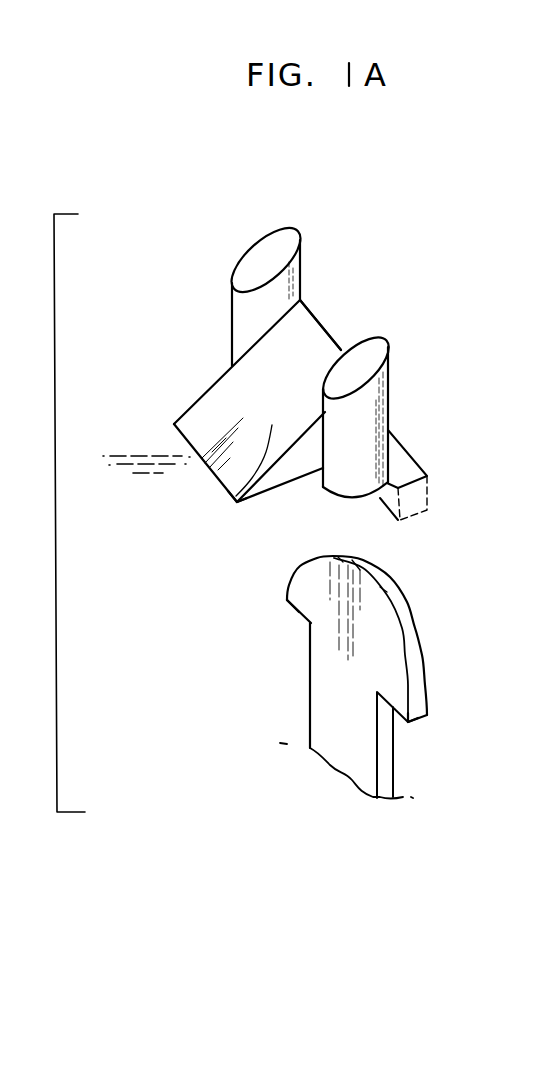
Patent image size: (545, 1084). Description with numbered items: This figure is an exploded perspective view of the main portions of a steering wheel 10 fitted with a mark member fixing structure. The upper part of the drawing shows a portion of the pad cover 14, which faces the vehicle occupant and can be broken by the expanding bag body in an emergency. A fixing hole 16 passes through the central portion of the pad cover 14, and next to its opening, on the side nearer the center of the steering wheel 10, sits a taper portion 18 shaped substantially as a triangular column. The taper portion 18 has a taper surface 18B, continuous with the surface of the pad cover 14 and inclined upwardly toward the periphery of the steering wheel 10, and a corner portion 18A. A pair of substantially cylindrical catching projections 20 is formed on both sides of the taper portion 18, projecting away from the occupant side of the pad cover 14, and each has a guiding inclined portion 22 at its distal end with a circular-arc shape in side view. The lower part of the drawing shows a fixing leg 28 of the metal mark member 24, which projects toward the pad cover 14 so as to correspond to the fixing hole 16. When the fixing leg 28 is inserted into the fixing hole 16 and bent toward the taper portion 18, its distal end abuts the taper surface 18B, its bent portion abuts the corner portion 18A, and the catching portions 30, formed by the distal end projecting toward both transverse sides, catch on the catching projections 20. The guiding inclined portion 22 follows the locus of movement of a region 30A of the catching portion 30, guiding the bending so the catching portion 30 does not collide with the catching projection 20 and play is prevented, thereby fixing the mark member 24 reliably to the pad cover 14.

The steering wheel 10 is at (247, 200).
The pad cover 14 is at (152, 462).
The fixing hole 16 is at (408, 468).
The taper portion 18 is at (218, 393).
The corner portion 18A is at (340, 332).
The taper surface 18B is at (237, 503).
The catching projection 20 is at (288, 288).
The guiding inclined portion 22 is at (284, 250).
The mark member 24 is at (308, 692).
The fixing leg 28 is at (363, 755).
The catching portion 30 is at (302, 603).
The region of the catching portion 30A is at (307, 620).